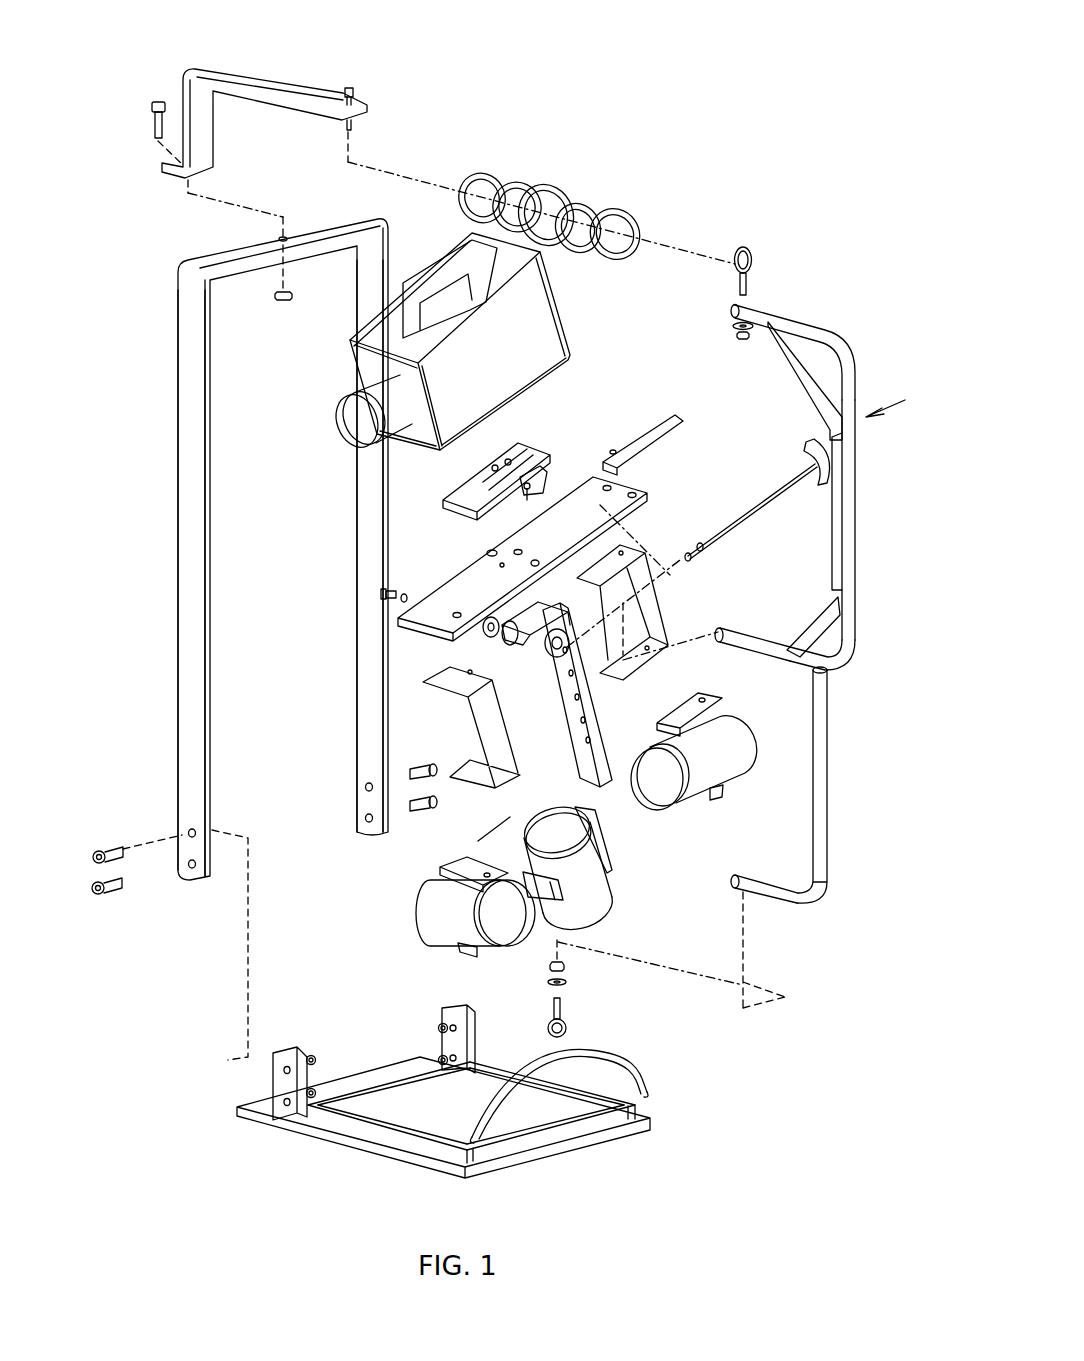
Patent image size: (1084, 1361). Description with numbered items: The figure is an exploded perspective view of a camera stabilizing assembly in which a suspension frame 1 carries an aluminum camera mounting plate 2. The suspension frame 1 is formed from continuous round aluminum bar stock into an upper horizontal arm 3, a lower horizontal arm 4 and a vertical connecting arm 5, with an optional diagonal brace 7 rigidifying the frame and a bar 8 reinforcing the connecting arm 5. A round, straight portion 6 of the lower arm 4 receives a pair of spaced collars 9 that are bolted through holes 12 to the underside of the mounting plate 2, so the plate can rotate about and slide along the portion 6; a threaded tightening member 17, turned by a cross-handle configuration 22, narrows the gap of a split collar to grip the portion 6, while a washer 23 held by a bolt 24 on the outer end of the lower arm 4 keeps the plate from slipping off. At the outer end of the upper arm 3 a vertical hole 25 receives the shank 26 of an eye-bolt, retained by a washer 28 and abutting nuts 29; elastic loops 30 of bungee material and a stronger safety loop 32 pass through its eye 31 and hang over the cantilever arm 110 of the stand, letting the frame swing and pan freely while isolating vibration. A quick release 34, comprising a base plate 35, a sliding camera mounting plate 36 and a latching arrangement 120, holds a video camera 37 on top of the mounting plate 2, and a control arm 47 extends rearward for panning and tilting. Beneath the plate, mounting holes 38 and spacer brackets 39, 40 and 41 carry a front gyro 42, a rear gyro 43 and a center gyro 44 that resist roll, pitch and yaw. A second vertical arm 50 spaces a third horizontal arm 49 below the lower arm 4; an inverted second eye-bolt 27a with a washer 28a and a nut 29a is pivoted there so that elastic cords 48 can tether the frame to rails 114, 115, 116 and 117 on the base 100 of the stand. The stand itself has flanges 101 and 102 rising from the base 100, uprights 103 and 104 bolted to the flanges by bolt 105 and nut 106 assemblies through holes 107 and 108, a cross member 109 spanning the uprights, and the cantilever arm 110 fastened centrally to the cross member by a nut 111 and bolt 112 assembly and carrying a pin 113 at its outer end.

The suspension frame 1 is at (895, 399).
The camera mounting plate 2 is at (551, 561).
The upper horizontal arm 3 is at (815, 322).
The lower horizontal arm 4 is at (800, 653).
The vertical connecting arm 5 is at (856, 520).
The portion 6 is at (742, 643).
The diagonal brace 7 is at (798, 360).
The bar 8 is at (836, 475).
The collars 9 is at (560, 632).
The holes 12 is at (487, 552).
The tightening member 17 is at (760, 515).
The configuration 22 is at (806, 451).
The washer 23 is at (491, 637).
The bolt 24 is at (382, 597).
The vertical hole 25 is at (740, 307).
The shank 26 is at (738, 297).
The second eye-bolt 27a is at (568, 1027).
The washer 28 is at (732, 326).
The washer 28a is at (565, 985).
The nut 29 is at (737, 340).
The nut 29a is at (564, 966).
The loops 30 is at (482, 173).
The eye 31 is at (751, 253).
The loop 32 is at (562, 186).
The quick release 34 is at (470, 489).
The base plate 35 is at (547, 443).
The camera mounting plate 36 is at (522, 437).
The video camera 37 is at (567, 317).
The mounting holes 38 is at (633, 493).
The front spacer bracket 39 is at (510, 730).
The rear spacer bracket 40 is at (664, 597).
The spacer bracket 41 is at (597, 707).
The front gyro 42 is at (422, 898).
The rear gyro 43 is at (700, 785).
The center gyro 44 is at (600, 913).
The control arm 47 is at (652, 420).
The elastic cords 48 is at (503, 1108).
The third horizontal arm 49 is at (768, 898).
The second vertical arm 50 is at (828, 863).
The base 100 is at (405, 1117).
The flange 101 is at (246, 1057).
The flange 102 is at (473, 1022).
The upright 103 is at (183, 680).
The upright 104 is at (363, 617).
The bolt 105 is at (113, 847).
The nut 106 is at (313, 1057).
The holes 107 is at (190, 832).
The holes 108 is at (283, 1072).
The cross member 109 is at (232, 579).
The cantilever arm 110 is at (246, 68).
The nut 111 is at (287, 301).
The bolt 112 is at (153, 120).
The pin 113 is at (350, 88).
The rail 114 is at (383, 1132).
The rail 115 is at (503, 1065).
The rail 116 is at (383, 1090).
The rail 117 is at (567, 1127).
The latching arrangement 120 is at (530, 486).